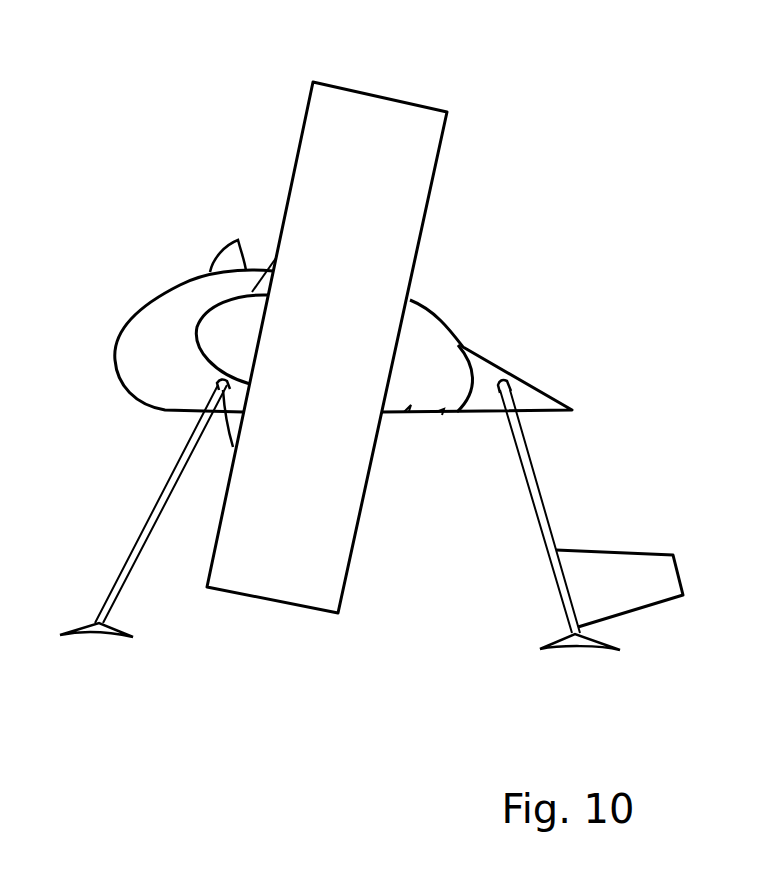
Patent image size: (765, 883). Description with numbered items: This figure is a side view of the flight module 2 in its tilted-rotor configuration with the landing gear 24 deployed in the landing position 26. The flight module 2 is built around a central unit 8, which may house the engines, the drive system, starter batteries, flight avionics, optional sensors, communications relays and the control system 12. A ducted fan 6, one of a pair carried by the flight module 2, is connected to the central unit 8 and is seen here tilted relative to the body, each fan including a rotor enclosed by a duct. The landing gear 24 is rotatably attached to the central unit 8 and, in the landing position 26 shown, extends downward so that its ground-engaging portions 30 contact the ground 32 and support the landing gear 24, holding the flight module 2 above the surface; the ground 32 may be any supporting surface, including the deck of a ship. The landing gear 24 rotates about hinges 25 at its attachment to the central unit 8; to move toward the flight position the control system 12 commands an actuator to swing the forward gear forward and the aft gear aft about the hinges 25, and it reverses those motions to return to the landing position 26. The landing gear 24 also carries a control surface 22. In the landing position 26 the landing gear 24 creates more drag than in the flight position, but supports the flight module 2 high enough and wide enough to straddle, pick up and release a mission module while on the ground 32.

The flight module 2 is at (120, 187).
The ducted fan 6 is at (353, 167).
The central unit 8 is at (155, 327).
The control system 12 is at (447, 327).
The control surface 22 is at (607, 587).
The landing gear 24 is at (150, 512).
The hinge 25 is at (220, 383).
The landing position 26 is at (250, 728).
The ground-engaging portion 30 is at (104, 640).
The ground 32 is at (447, 689).